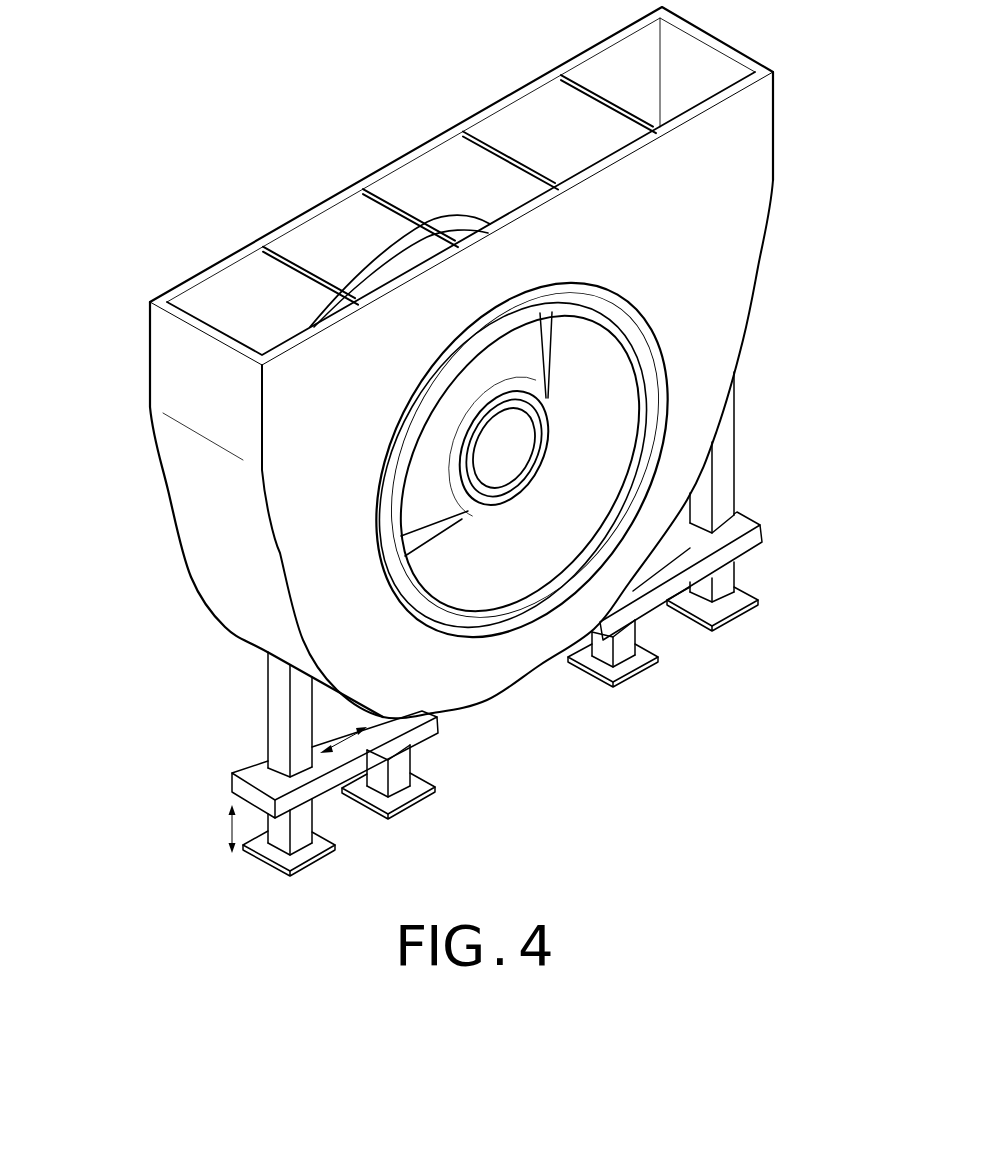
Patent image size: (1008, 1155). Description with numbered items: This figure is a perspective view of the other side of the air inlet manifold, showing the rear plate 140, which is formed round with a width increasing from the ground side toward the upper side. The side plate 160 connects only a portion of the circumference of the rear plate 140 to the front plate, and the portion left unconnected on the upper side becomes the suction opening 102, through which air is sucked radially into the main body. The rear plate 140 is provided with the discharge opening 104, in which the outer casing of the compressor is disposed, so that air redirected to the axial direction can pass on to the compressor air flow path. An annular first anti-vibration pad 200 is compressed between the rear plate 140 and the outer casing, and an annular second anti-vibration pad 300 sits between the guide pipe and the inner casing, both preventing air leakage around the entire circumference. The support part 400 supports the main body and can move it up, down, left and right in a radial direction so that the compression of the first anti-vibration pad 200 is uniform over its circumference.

The suction opening 102 is at (462, 186).
The discharge opening 104 is at (606, 412).
The rear plate 140 is at (690, 247).
The side plate 160 is at (213, 507).
The first anti-vibration pad 200 is at (482, 622).
The second anti-vibration pad 300 is at (498, 500).
The support part 400 is at (236, 714).